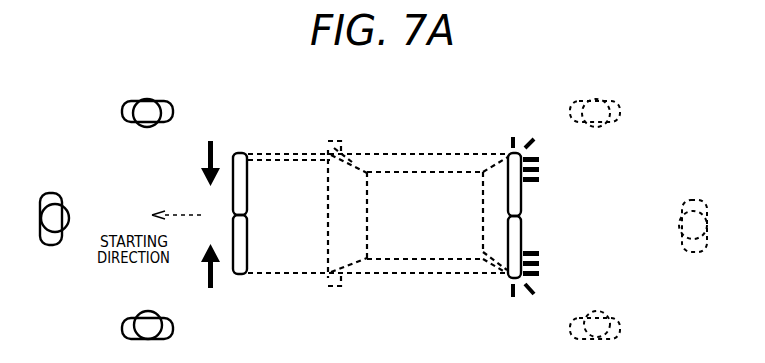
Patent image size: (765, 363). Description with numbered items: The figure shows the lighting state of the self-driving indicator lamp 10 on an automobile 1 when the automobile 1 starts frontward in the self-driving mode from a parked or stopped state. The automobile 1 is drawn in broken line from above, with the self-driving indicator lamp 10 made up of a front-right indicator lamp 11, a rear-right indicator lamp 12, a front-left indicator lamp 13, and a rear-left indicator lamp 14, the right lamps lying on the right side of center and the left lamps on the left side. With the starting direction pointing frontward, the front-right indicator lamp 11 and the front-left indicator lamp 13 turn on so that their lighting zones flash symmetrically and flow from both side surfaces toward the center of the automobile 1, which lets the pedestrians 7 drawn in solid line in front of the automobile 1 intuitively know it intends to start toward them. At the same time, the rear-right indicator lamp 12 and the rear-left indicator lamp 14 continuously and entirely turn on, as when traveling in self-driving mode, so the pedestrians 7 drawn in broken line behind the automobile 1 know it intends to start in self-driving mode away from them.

The automobile 1 is at (368, 273).
The pedestrians 7 is at (174, 113).
The self-driving indicator lamp 10 is at (381, 223).
The front-right indicator lamp 11 is at (245, 157).
The rear-right indicator lamp 12 is at (509, 157).
The front-left indicator lamp 13 is at (244, 272).
The rear-left indicator lamp 14 is at (510, 278).